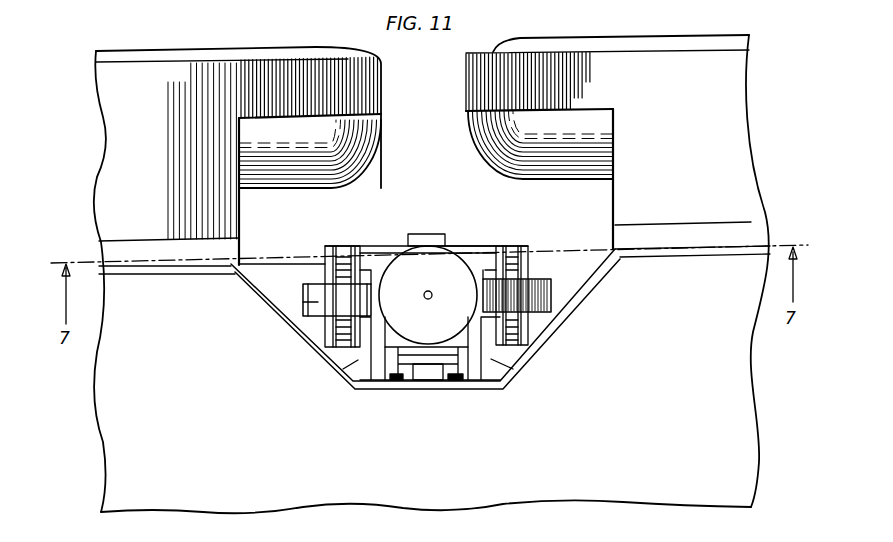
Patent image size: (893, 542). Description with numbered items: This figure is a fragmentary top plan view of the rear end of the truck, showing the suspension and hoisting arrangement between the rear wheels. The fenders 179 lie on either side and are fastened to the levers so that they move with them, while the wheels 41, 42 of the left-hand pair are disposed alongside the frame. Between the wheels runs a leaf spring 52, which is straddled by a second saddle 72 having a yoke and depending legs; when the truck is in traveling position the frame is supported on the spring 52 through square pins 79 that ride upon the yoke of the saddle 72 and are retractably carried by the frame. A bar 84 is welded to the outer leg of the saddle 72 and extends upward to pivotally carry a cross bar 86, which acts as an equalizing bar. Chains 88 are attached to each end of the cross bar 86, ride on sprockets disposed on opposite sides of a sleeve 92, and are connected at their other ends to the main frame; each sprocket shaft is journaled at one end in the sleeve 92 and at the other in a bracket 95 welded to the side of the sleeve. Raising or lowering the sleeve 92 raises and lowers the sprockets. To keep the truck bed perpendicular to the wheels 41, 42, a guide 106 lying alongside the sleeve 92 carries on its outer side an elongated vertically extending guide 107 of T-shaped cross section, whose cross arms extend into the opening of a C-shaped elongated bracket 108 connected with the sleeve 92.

The fender 179 is at (115, 122).
The wheel 41 is at (352, 140).
The wheel 42 is at (480, 128).
The leaf spring 52 is at (290, 272).
The second saddle 72 is at (475, 247).
The pin 79 is at (340, 381).
The bar 84 is at (416, 232).
The cross bar 86 is at (470, 251).
The chain 88 is at (340, 255).
The sleeve 92 is at (403, 256).
The bracket 95 is at (312, 302).
The guide 106 is at (315, 350).
The vertically-extending guide 107 is at (425, 363).
The elongated bracket 108 is at (386, 376).